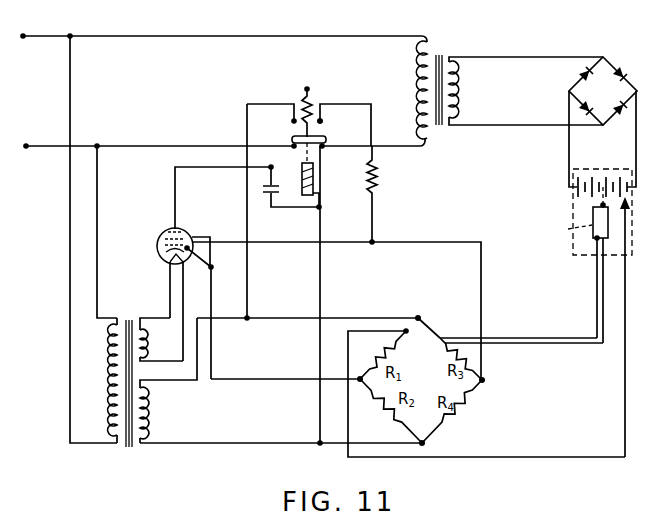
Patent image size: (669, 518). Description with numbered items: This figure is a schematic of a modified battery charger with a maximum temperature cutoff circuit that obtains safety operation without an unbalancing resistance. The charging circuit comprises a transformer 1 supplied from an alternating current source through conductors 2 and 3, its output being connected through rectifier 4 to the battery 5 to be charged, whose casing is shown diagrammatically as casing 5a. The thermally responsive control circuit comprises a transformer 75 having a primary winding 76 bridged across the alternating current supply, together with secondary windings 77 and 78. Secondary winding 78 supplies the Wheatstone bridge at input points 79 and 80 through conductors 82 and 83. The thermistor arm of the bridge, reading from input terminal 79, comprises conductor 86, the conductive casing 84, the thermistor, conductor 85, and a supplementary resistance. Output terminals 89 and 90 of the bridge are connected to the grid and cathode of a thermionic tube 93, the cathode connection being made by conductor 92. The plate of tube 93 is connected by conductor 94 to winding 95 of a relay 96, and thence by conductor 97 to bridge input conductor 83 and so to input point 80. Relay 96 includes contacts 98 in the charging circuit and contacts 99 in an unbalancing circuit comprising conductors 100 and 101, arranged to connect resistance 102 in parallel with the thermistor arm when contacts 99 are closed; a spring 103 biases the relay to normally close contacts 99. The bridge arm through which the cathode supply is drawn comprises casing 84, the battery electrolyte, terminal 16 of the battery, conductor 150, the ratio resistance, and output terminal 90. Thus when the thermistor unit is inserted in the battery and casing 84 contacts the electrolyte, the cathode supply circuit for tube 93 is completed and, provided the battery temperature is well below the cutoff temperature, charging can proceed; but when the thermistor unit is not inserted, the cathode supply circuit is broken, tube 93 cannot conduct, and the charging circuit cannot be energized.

The transformer 1 is at (447, 46).
The conductor 2 is at (138, 36).
The conductor 3 is at (115, 146).
The rectifier 4 is at (603, 91).
The battery 5 is at (606, 176).
The casing of battery 5a is at (632, 232).
The terminal of the battery 16 is at (629, 202).
The transformer 75 is at (134, 454).
The primary winding 76 is at (113, 438).
The secondary winding 77 is at (148, 344).
The secondary winding 78 is at (149, 398).
The input point 79 is at (421, 316).
The input point 80 is at (424, 443).
The conductor 82 is at (281, 318).
The conductor 83 is at (334, 447).
The casing 84 is at (593, 216).
The conductor 85 is at (516, 344).
The conductor 86 is at (519, 338).
The output terminal 89 is at (485, 382).
The output terminal 90 is at (358, 381).
The conductor 92 is at (249, 379).
The thermionic tube 93 is at (158, 242).
The conductor 94 is at (175, 191).
The winding 95 is at (314, 186).
The relay 96 is at (315, 164).
The conductor 97 is at (322, 297).
The contacts 98 is at (326, 144).
The contacts 99 is at (324, 123).
The conductor 100 is at (249, 297).
The conductor 101 is at (372, 133).
The resistance 102 is at (379, 187).
The spring 103 is at (312, 105).
The conductor 150 is at (527, 458).